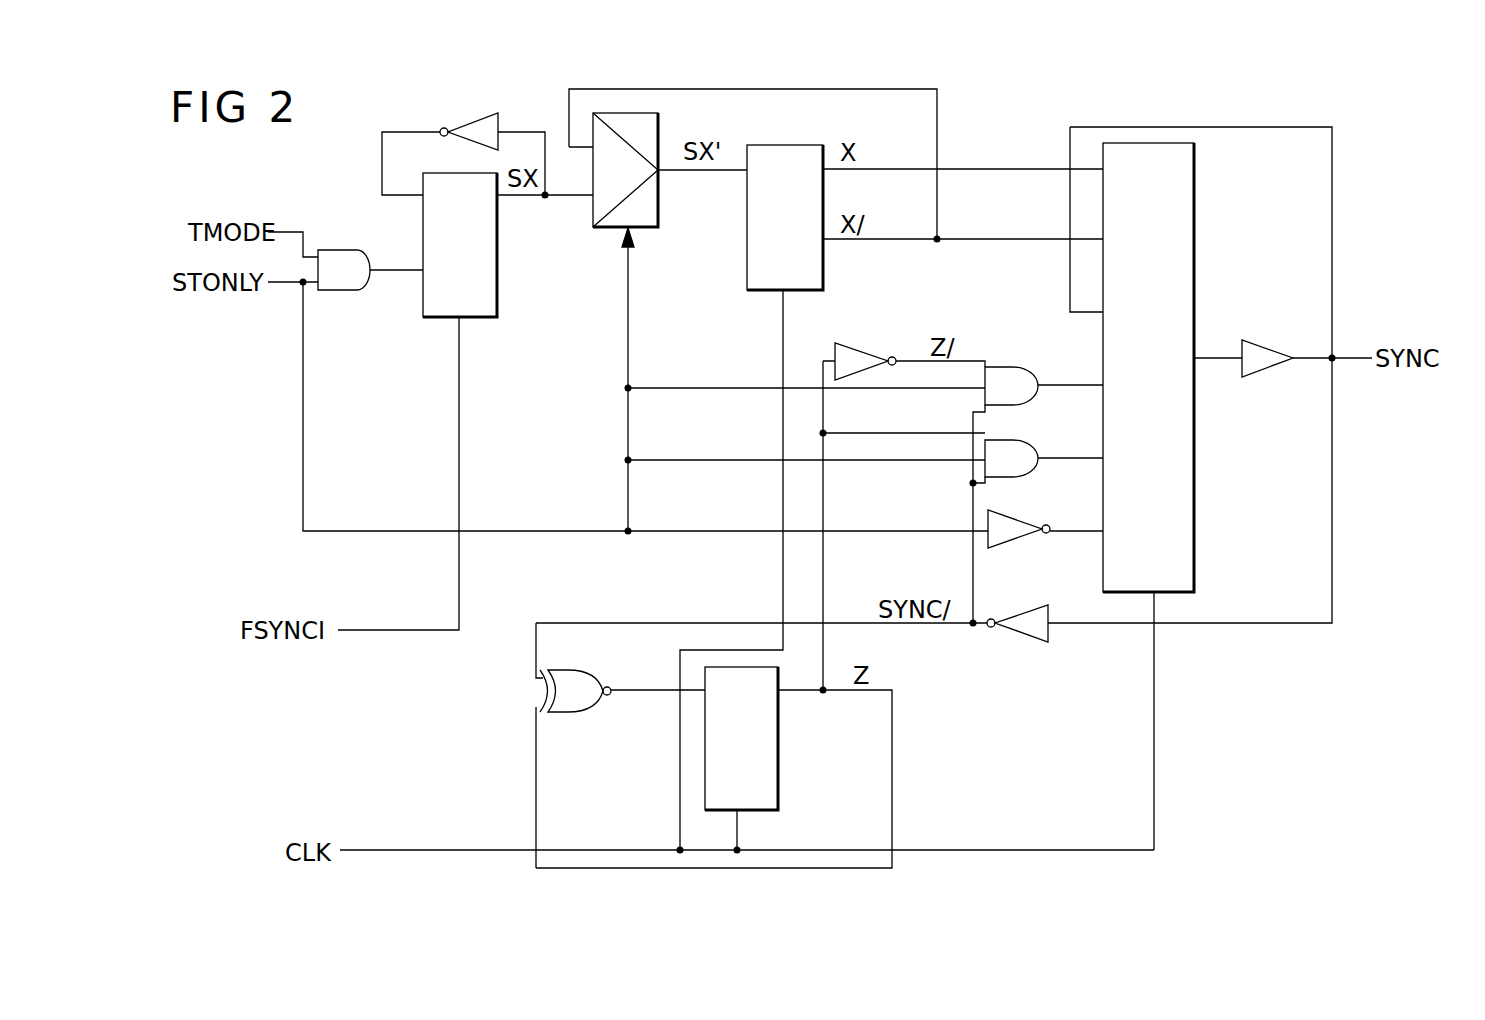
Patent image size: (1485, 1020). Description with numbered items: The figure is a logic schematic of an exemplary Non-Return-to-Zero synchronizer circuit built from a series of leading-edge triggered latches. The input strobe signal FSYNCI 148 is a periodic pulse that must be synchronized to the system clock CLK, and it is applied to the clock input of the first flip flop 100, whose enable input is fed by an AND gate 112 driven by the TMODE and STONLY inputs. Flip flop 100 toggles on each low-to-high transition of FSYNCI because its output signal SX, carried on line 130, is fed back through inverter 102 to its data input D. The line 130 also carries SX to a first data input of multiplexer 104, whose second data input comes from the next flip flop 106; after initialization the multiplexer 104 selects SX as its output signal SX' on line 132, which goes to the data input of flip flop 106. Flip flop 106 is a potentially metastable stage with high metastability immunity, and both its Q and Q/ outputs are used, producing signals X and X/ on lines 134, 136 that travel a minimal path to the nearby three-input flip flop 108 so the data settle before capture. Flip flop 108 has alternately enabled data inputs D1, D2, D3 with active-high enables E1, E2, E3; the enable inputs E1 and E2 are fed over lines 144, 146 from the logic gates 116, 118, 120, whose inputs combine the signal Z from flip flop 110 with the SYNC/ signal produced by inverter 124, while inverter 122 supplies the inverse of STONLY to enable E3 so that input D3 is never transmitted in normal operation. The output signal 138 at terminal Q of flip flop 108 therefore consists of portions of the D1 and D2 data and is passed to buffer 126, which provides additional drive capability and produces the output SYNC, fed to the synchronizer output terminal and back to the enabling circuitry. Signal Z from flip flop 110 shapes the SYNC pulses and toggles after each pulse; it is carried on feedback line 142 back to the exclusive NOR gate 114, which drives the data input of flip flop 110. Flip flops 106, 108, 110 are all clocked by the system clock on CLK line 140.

The flip flop 100 is at (497, 307).
The inverter 102 is at (475, 123).
The multiplexer 104 is at (645, 228).
The flip flop 106 is at (747, 268).
The three-input flip flop 108 is at (1194, 198).
The flip flop 110 is at (778, 745).
The AND gate 112 is at (340, 290).
The logic gate 114 is at (565, 708).
The logic gate 116 is at (872, 352).
The logic gate 118 is at (1012, 367).
The logic gate 120 is at (1020, 440).
The logic gate 122 is at (1018, 540).
The logic gate 124 is at (1025, 637).
The buffer 126 is at (1260, 368).
The SX signal line 130 is at (560, 197).
The SX' signal line 132 is at (715, 175).
The X signal line 134 is at (1050, 167).
The X/ signal line 136 is at (1055, 238).
The output signal 138 is at (1215, 358).
The CLK line 140 is at (485, 850).
The Z feedback line 142 is at (892, 745).
The E1 input line 144 is at (1080, 385).
The E2 input line 146 is at (1058, 458).
The input strobe signal FSYNCI 148 is at (385, 632).